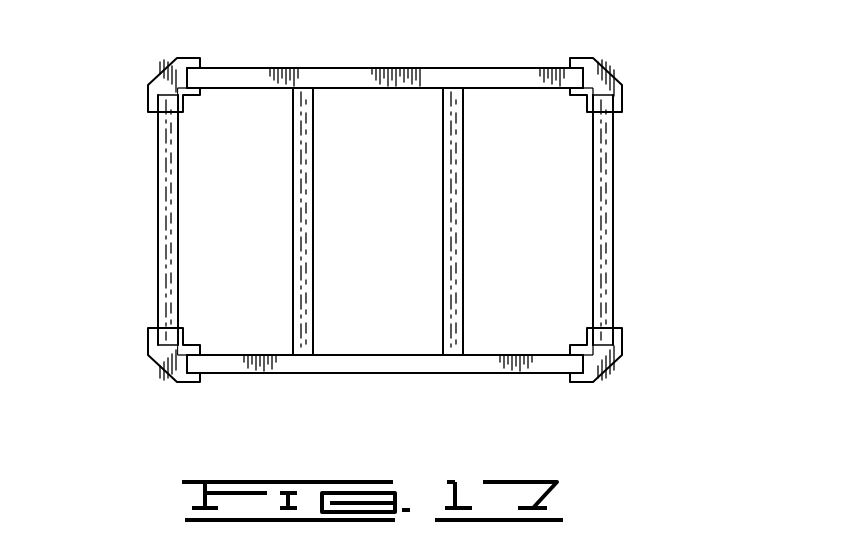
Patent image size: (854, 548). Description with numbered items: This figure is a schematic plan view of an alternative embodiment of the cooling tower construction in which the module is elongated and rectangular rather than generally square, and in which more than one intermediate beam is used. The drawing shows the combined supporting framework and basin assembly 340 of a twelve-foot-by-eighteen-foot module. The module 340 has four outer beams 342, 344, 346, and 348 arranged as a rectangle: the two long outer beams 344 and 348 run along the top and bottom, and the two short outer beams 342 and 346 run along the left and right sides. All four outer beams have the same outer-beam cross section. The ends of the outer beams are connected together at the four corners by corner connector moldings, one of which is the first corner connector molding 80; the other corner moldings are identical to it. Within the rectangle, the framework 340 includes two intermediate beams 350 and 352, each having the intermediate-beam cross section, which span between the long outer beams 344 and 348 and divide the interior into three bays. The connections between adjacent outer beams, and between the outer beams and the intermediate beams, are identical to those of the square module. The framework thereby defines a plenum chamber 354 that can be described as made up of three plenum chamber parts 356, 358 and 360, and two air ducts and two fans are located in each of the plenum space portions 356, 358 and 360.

The first corner connector molding 80 is at (165, 70).
The combined supporting framework and basin assembly 340 is at (643, 70).
The outer beam 342 is at (166, 235).
The outer beam 344 is at (380, 68).
The outer beam 346 is at (607, 210).
The outer beam 348 is at (500, 367).
The intermediate beam 350 is at (303, 222).
The intermediate beam 352 is at (455, 222).
The plenum chamber 354 is at (246, 163).
The plenum chamber part 356 is at (246, 198).
The plenum chamber part 358 is at (390, 163).
The plenum chamber part 360 is at (541, 163).